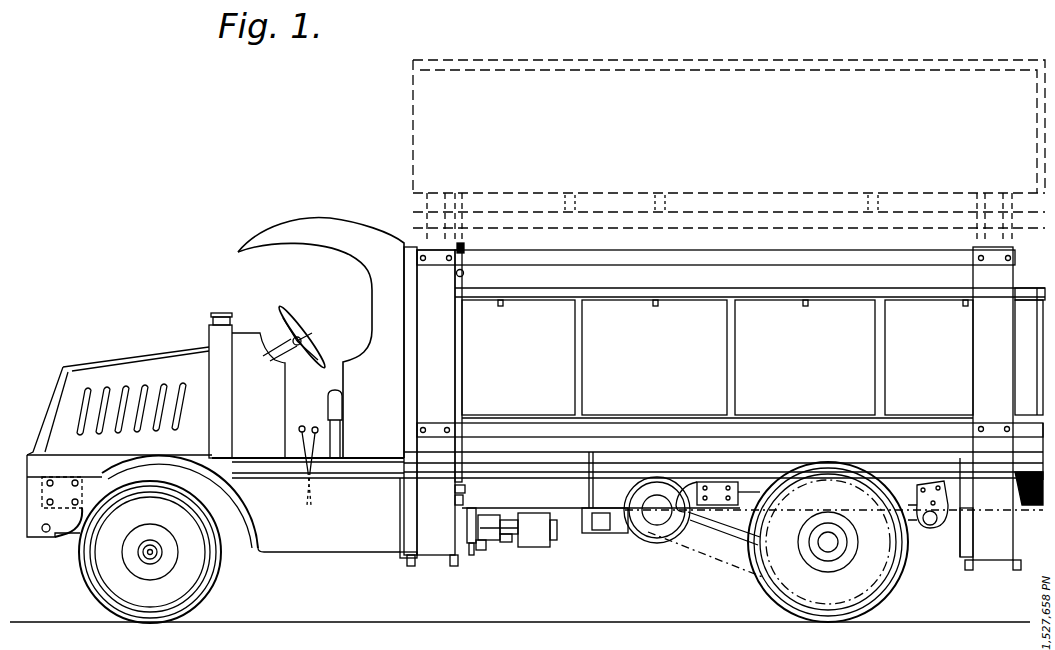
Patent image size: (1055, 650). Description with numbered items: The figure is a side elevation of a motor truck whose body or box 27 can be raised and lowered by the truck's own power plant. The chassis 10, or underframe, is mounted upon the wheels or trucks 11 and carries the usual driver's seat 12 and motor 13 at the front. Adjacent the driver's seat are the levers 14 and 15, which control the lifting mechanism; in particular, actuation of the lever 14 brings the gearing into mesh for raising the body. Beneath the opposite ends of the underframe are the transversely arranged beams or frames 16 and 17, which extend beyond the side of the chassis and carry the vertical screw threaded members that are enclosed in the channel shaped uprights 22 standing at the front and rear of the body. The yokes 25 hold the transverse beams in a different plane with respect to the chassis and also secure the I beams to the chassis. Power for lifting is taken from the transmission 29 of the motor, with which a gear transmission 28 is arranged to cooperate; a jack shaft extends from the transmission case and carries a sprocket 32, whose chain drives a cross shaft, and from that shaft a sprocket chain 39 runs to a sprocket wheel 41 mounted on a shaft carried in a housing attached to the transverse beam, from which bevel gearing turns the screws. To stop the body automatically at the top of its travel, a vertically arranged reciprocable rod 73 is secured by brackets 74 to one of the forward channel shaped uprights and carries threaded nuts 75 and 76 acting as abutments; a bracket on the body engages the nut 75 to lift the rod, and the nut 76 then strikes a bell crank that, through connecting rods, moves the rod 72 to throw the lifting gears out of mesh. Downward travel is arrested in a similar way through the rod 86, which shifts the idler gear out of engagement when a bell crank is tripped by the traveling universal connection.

The chassis 10 is at (723, 500).
The wheels 11 is at (226, 574).
The driver's seat 12 is at (363, 345).
The motor 13 is at (125, 376).
The lever 14 is at (300, 430).
The lever 15 is at (313, 426).
The transverse beam 16 is at (410, 548).
The transverse beam 17 is at (948, 540).
The channel shaped uprights 22 is at (730, 408).
The yokes 25 is at (605, 492).
The body 27 is at (677, 62).
The gear transmission 28 is at (537, 548).
The transmission 29 is at (628, 530).
The sprocket 32 is at (511, 559).
The sprocket chain 39 is at (484, 548).
The sprocket wheel 41 is at (472, 552).
The rod 72 is at (470, 512).
The reciprocable rod 73 is at (463, 396).
The brackets 74 is at (465, 249).
The nut 75 is at (466, 274).
The nut 76 is at (455, 492).
The rod 86 is at (490, 520).